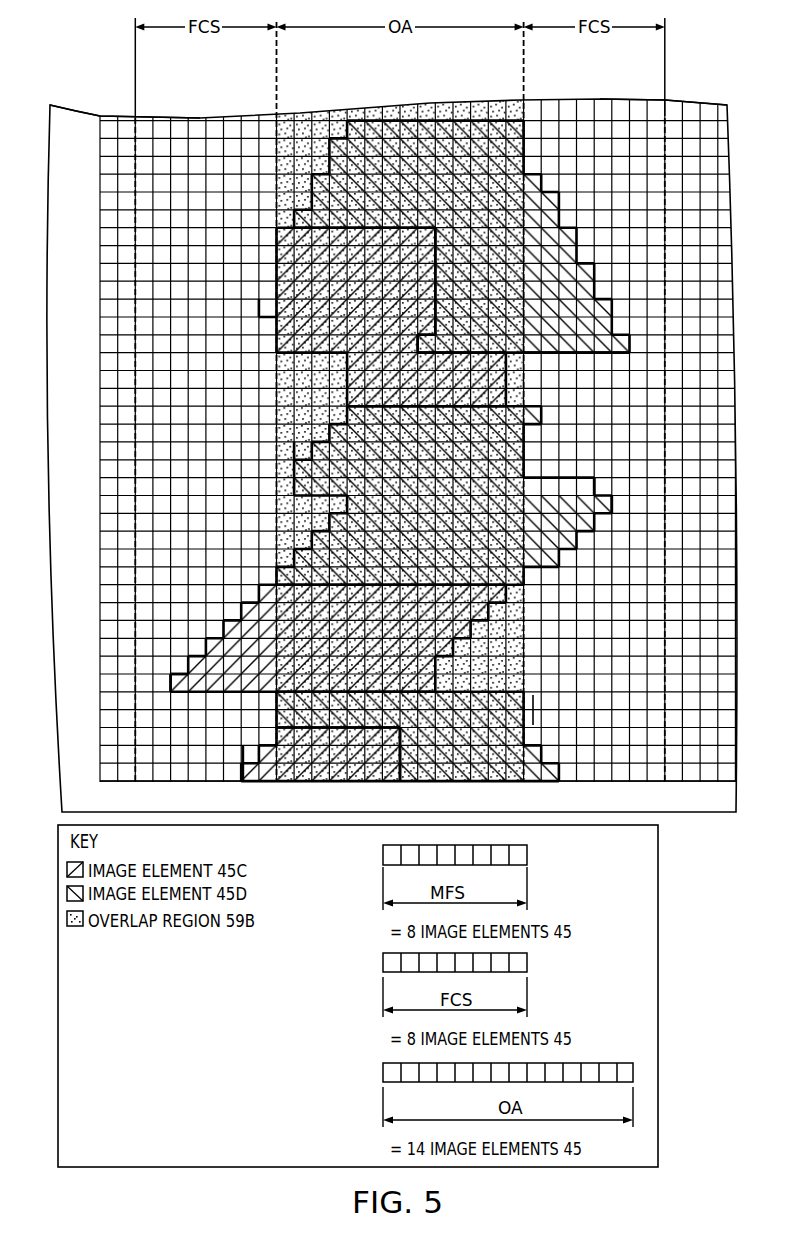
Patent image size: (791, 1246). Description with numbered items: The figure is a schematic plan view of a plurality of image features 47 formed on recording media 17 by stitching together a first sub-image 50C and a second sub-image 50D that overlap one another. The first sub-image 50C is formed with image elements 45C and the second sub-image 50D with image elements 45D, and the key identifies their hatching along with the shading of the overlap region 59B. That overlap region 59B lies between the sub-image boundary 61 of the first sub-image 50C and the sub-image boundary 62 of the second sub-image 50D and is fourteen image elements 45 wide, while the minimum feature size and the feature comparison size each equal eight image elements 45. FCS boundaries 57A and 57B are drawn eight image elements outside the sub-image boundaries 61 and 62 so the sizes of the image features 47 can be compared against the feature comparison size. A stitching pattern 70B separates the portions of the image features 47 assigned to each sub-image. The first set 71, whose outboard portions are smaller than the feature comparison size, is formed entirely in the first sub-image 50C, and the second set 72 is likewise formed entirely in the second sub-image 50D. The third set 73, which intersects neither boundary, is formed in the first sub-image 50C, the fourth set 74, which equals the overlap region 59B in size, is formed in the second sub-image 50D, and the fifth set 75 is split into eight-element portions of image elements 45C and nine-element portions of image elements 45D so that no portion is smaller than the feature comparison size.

The recording media 17 is at (89, 805).
The image features 47 is at (258, 302).
The first sub-image 50C is at (117, 105).
The second sub-image 50D is at (694, 95).
The FCS boundary 57A is at (132, 226).
The FCS boundary 57B is at (668, 200).
The overlap region 59B is at (429, 105).
The sub-image boundary 61 is at (521, 471).
The sub-image boundary 62 is at (272, 412).
The stitching pattern 70B is at (410, 783).
The first set 71 is at (244, 577).
The second set 72 is at (574, 591).
The third set 73 is at (523, 382).
The fourth set 74 is at (535, 711).
The fifth set 75 is at (241, 765).
The image elements 45C is at (75, 869).
The image elements 45D is at (75, 893).
The image elements 45 is at (508, 963).